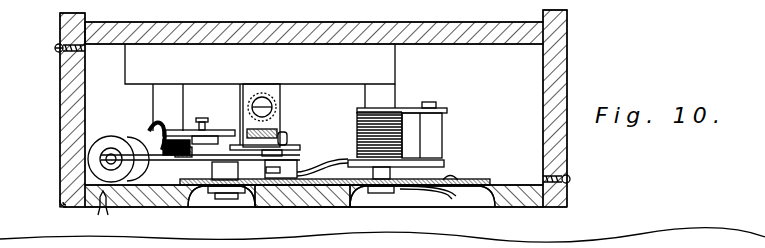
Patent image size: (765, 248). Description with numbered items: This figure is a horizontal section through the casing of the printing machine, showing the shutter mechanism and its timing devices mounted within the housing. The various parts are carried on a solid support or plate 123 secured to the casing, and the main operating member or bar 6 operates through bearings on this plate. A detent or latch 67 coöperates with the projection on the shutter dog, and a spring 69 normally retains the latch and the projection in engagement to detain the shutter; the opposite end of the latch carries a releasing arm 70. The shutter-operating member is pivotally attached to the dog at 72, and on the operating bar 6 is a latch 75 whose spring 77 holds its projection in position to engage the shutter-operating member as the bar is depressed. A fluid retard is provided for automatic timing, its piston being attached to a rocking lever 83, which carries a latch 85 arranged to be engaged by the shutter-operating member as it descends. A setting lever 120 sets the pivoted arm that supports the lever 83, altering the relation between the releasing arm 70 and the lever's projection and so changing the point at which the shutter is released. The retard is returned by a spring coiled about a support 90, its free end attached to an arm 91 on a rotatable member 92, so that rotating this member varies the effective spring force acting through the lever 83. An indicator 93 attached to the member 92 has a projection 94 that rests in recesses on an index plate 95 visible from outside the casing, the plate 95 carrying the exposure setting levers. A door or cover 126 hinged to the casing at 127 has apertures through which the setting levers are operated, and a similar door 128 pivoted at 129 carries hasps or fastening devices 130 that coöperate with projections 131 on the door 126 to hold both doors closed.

The main operating member or bar 6 is at (279, 97).
The detent or latch 67 is at (170, 130).
The spring 69 is at (148, 126).
The releasing arm 70 is at (253, 186).
The pivot 72 is at (209, 126).
The latch 75 is at (287, 142).
The spring 77 is at (286, 120).
The rocking lever 83 is at (184, 160).
The latch 85 is at (303, 160).
The support 90 is at (443, 100).
The arm 91 is at (429, 142).
The rotatable member 92 is at (438, 162).
The indicator 93 is at (471, 190).
The projection 94 is at (447, 188).
The index plate 95 is at (462, 180).
The setting lever 120 is at (221, 194).
The support or plate 123 is at (260, 64).
The door or cover 126 is at (318, 198).
The hinge 127 is at (571, 179).
The door 128 is at (72, 108).
The pivot 129 is at (60, 53).
The hasps or fastening devices 130 is at (84, 208).
The projections 131 is at (108, 216).